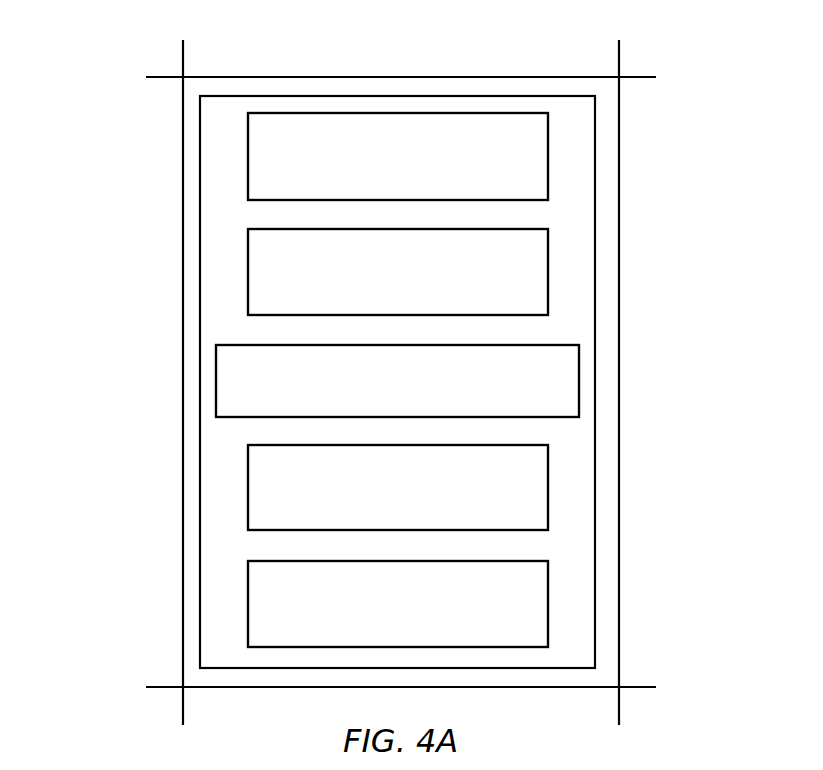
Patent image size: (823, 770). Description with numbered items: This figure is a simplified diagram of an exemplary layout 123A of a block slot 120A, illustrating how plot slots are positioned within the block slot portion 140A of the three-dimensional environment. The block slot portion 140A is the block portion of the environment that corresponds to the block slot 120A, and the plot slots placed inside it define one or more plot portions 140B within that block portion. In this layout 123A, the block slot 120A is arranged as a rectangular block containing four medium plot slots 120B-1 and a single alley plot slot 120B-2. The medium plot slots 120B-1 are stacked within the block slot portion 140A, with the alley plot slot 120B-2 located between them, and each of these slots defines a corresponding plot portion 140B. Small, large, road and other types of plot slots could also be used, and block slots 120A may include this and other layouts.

The block slot 120A is at (162, 62).
The layout 123A is at (672, 55).
The block slot portion 140A is at (465, 78).
The plot portion 140B is at (262, 156).
The medium plot slot 120B-1 is at (541, 143).
The alley plot slot 120B-2 is at (570, 376).